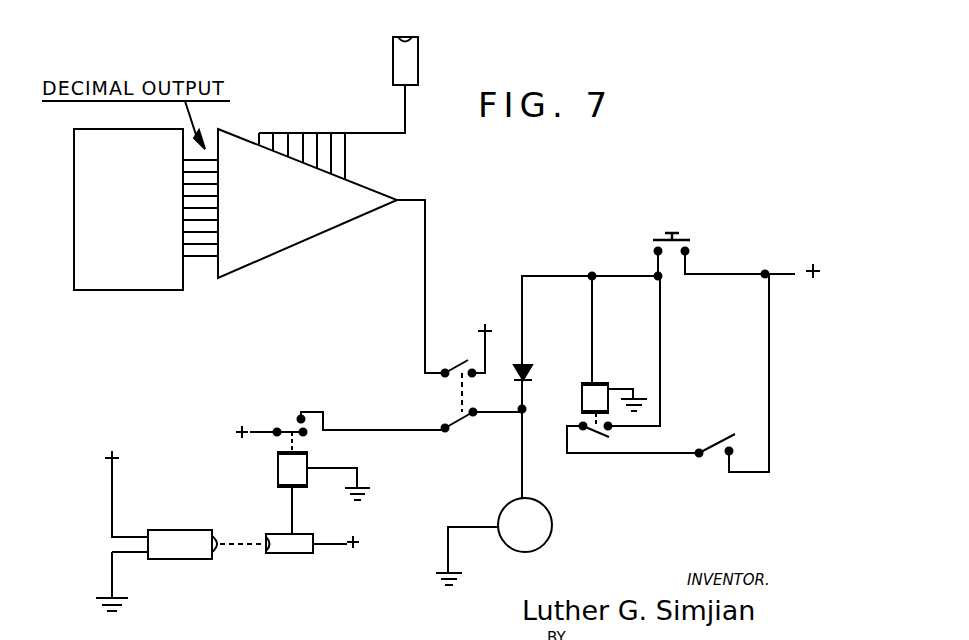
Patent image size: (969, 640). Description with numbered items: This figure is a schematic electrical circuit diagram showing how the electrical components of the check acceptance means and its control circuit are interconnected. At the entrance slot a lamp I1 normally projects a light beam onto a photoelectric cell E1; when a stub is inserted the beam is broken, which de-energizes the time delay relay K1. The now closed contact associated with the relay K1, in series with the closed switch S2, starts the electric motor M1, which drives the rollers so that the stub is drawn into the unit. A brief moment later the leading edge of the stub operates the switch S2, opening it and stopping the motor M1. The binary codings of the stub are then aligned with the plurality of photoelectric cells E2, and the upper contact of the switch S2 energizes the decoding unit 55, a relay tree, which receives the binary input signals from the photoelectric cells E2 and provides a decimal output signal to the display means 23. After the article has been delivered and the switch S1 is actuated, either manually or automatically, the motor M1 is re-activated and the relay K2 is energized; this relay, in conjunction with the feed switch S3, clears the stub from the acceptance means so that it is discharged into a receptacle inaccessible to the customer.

The display means 23 is at (125, 280).
The decoding unit 55 is at (287, 240).
The photoelectric cells E2 is at (412, 62).
The photoelectric cell E1 is at (295, 553).
The source of illumination I1 is at (170, 535).
The time delay relay K1 is at (285, 468).
The relay K2 is at (583, 392).
The switch S1 is at (680, 237).
The switch S2 is at (457, 366).
The feed switch S3 is at (712, 448).
The electric motor M1 is at (494, 497).